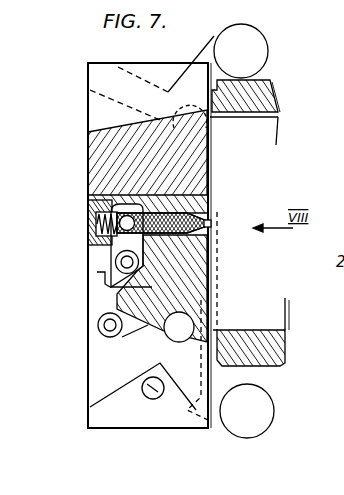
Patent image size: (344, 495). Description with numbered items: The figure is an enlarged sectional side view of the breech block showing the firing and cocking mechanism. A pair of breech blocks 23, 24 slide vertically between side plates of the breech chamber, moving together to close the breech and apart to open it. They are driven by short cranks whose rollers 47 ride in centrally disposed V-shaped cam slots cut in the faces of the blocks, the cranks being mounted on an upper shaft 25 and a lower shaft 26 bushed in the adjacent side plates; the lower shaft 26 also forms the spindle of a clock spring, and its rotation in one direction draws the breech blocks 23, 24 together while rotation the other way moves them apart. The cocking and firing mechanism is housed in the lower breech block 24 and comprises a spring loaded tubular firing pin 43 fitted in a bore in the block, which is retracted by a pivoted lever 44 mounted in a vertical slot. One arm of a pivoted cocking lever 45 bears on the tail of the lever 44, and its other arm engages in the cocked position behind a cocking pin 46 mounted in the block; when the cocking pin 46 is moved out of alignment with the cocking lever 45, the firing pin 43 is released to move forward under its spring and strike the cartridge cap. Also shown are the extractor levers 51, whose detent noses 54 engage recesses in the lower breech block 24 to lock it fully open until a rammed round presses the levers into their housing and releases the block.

The breech block 23 is at (93, 162).
The breech block 24 is at (112, 290).
The shaft 25 is at (242, 55).
The shaft 26 is at (250, 420).
The firing pin 43 is at (212, 202).
The pivoted lever 44 is at (110, 270).
The cocking lever 45 is at (130, 334).
The cocking pin 46 is at (142, 388).
The roller 47 is at (207, 128).
The extractor lever 51 is at (217, 212).
The detent nose 54 is at (188, 335).